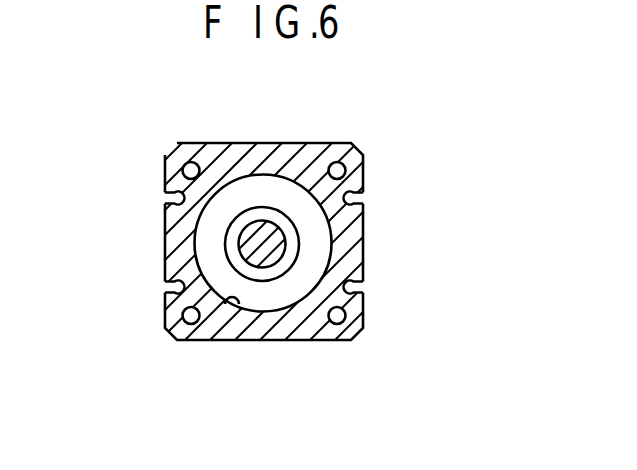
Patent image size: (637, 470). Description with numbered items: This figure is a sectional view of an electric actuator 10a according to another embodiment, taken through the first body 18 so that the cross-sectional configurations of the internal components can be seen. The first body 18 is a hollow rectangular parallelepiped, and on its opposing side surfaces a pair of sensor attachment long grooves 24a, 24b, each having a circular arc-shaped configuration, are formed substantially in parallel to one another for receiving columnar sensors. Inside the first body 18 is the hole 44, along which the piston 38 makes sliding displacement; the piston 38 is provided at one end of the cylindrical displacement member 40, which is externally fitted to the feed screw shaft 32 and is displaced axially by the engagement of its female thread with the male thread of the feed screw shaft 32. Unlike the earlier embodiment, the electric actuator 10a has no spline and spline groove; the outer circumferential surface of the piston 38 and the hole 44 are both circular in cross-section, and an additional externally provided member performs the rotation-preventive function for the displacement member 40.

The electric actuator 10a is at (395, 128).
The first body 18 is at (226, 143).
The sensor attachment long groove 24a is at (177, 198).
The sensor attachment long groove 24b is at (177, 287).
The feed screw shaft 32 is at (276, 244).
The piston 38 is at (280, 292).
The displacement member 40 is at (273, 208).
The hole 44 is at (238, 298).